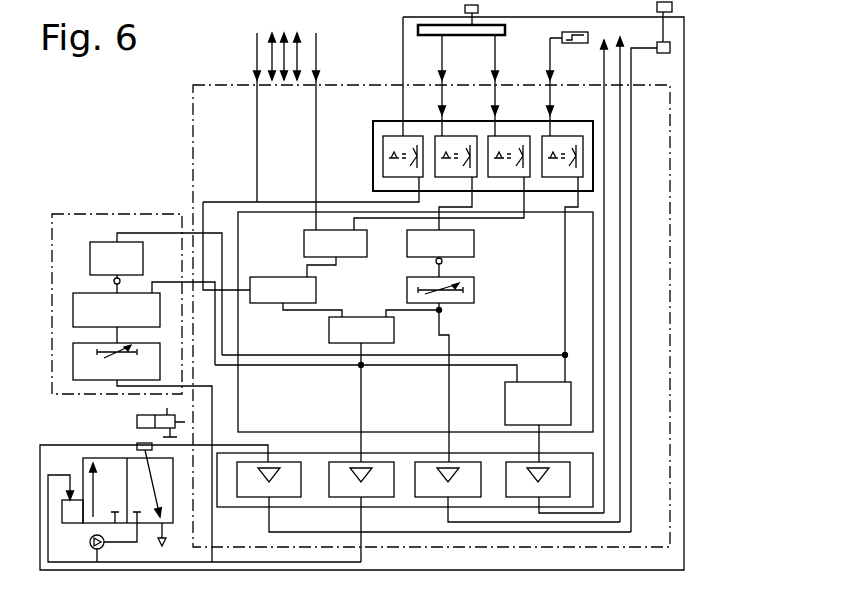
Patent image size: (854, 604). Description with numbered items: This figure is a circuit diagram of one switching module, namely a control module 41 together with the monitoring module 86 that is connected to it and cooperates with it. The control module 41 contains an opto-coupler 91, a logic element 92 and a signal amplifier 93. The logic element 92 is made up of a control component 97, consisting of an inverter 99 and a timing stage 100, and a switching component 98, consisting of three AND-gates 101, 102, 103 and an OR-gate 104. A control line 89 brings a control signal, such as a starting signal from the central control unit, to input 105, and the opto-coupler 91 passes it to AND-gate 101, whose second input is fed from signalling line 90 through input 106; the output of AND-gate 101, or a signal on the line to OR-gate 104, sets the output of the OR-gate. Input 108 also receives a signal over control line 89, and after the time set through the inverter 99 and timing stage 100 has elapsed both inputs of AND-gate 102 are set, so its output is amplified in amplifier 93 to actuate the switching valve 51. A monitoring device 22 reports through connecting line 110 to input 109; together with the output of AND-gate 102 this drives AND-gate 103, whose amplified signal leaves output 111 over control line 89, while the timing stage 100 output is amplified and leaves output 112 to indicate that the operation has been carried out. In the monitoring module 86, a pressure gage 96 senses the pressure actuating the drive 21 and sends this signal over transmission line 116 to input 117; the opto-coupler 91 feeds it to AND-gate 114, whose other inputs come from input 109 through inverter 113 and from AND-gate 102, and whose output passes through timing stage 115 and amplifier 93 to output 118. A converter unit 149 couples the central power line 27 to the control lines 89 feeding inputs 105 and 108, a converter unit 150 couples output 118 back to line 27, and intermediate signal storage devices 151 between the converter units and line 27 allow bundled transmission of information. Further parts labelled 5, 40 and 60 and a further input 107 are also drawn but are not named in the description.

The pump 5 is at (105, 551).
The drive 21 is at (167, 408).
The monitoring device 22 is at (562, 33).
The central power line 27 is at (480, 9).
The pilot valve 40 is at (58, 514).
The control module 41 is at (95, 136).
The switching valve 51 is at (110, 463).
The hydraulic line 60 is at (72, 524).
The monitoring module 86 is at (72, 402).
The control line 89 is at (443, 54).
The signalling line 90 is at (257, 62).
The opto-coupler 91 is at (585, 183).
The logic element 92 is at (548, 298).
The signal amplifier 93 is at (583, 478).
The pressure gage 96 is at (215, 443).
The control component 97 is at (461, 242).
The switching component 98 is at (372, 224).
The inverter 99 is at (466, 250).
The timing stage 100 is at (464, 296).
The AND-gate 101 is at (361, 246).
The AND-gate 102 is at (377, 340).
The AND-gate 103 is at (505, 394).
The OR-gate 104 is at (268, 303).
The input 105 is at (477, 85).
The input 106 is at (316, 140).
The input line 107 is at (257, 140).
The input 108 is at (426, 85).
The input 109 is at (532, 87).
The connecting line 110 is at (577, 54).
The output 111 is at (604, 100).
The output 112 is at (621, 100).
The inverter 113 is at (104, 250).
The AND-gate 114 is at (80, 300).
The timing stage 115 is at (97, 370).
The transmission line 116 is at (617, 572).
The input 117 is at (402, 105).
The output 118 is at (633, 54).
The converter unit 149 is at (420, 37).
The converter unit 150 is at (671, 52).
The intermediate signal storage device 151 is at (465, 9).